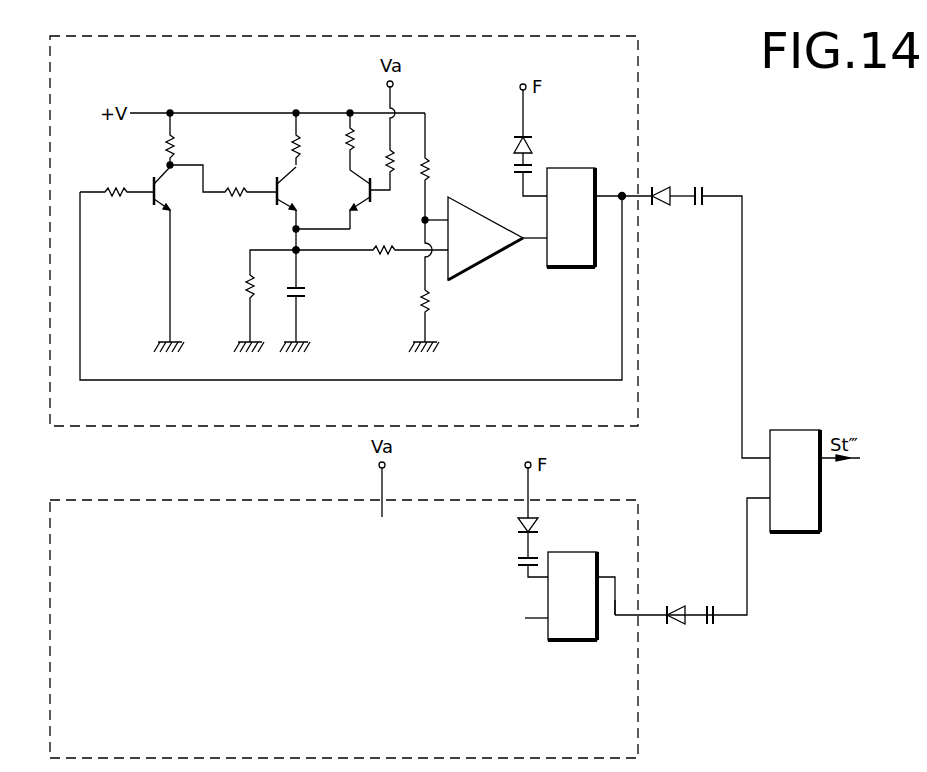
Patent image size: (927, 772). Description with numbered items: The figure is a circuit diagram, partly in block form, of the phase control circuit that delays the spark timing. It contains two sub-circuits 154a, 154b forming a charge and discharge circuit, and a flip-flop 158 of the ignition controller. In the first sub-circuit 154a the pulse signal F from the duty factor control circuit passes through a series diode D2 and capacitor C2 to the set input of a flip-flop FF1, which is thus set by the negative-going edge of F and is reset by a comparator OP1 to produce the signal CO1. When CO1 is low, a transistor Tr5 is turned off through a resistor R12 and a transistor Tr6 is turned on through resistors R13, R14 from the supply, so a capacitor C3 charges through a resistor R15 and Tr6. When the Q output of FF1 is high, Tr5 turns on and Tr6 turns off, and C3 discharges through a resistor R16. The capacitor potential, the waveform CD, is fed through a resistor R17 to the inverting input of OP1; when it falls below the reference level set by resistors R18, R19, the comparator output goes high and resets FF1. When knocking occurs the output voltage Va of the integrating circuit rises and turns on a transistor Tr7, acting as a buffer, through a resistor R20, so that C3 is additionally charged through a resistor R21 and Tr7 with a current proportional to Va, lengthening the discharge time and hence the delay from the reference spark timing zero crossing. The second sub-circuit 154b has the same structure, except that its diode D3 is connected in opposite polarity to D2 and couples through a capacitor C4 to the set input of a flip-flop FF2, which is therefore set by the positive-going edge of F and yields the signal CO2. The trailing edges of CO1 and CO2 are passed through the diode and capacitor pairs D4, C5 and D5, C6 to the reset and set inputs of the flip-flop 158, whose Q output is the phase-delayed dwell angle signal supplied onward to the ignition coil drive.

The sub-circuit 154a is at (638, 68).
The sub-circuit 154b is at (640, 528).
The flip-flop 158 is at (804, 430).
The resistor R12 is at (117, 178).
The resistor R13 is at (190, 139).
The resistor R14 is at (223, 191).
The resistor R15 is at (316, 139).
The resistor R16 is at (251, 296).
The resistor R17 is at (372, 240).
The resistor R18 is at (444, 166).
The resistor R19 is at (407, 281).
The resistor R20 is at (398, 157).
The resistor R21 is at (369, 141).
The transistor Tr5 is at (147, 254).
The transistor Tr6 is at (291, 182).
The transistor Tr7 is at (342, 199).
The capacitor C2 is at (512, 167).
The capacitor C3 is at (309, 285).
The capacitor C4 is at (516, 562).
The capacitor C5 is at (700, 185).
The capacitor C6 is at (711, 604).
The diode D2 is at (538, 146).
The diode D3 is at (542, 527).
The diode D4 is at (664, 185).
The diode D5 is at (677, 604).
The comparator OP1 is at (503, 255).
The flip-flop FF1 is at (571, 234).
The flip-flop FF2 is at (561, 612).
The capacitor voltage waveform CD is at (299, 253).
The output signal CO1 is at (621, 190).
The output signal CO2 is at (620, 595).